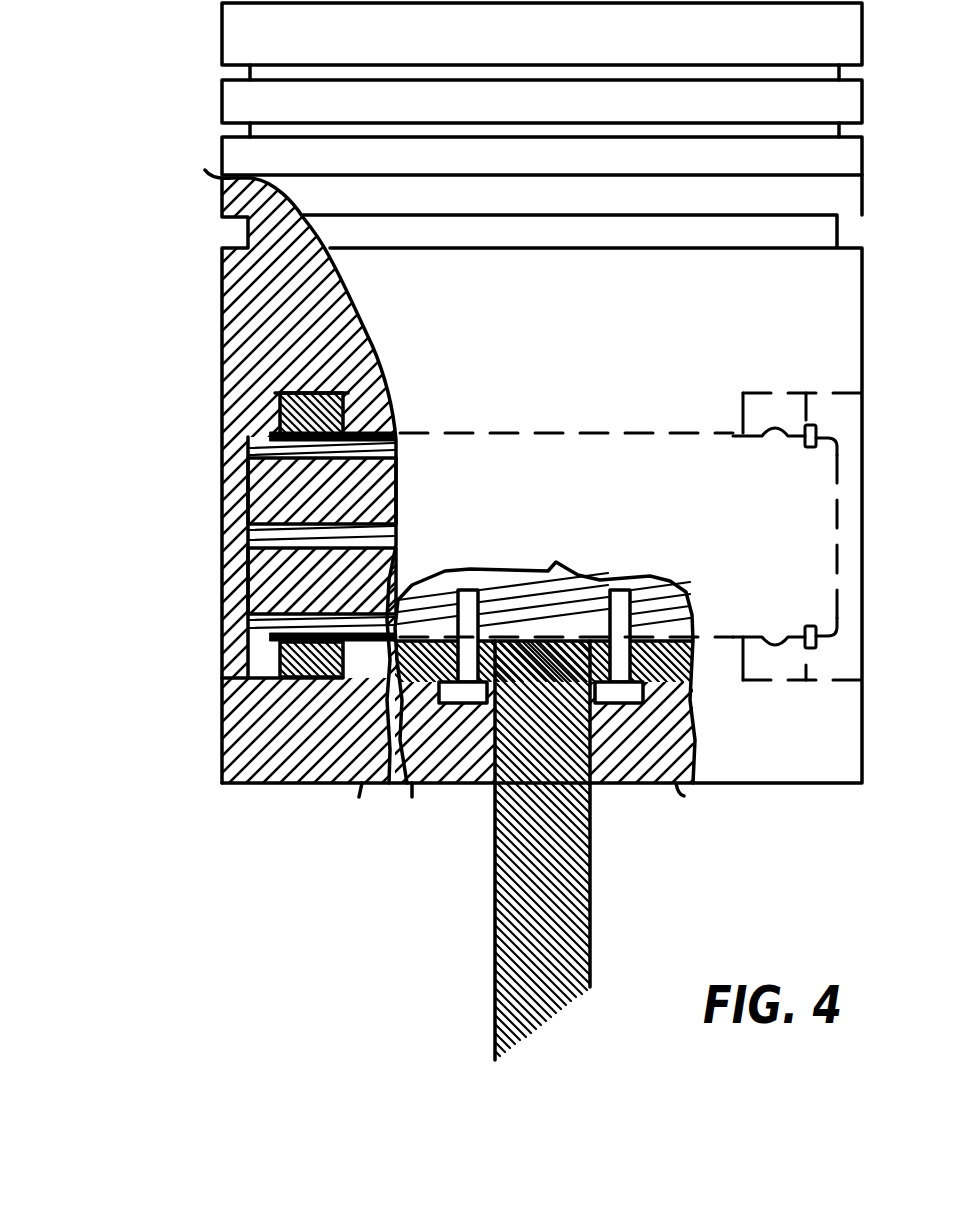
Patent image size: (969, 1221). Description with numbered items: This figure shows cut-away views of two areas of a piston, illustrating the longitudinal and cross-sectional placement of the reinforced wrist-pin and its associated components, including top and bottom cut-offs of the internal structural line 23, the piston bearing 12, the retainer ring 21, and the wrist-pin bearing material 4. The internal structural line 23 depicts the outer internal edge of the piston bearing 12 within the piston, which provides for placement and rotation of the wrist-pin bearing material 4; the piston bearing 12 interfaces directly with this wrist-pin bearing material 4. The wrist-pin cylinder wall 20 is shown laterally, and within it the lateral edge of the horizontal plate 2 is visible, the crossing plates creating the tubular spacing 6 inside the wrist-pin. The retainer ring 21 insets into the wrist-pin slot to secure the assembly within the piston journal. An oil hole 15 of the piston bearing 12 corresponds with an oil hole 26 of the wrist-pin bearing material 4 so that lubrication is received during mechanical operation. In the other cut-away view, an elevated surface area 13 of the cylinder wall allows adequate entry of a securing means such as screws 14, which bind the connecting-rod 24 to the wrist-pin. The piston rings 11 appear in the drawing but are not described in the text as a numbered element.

The horizontal plate 2 is at (262, 527).
The wrist-pin bearing material 4 is at (297, 340).
The tubular spacing 6 is at (232, 563).
The piston rings 11 is at (250, 103).
The piston bearing 12 is at (293, 404).
The elevated surface area 13 is at (491, 590).
The screws 14 is at (609, 697).
The oil hole 15 is at (345, 396).
The wrist-pin cylinder wall 20 is at (258, 472).
The retainer ring 21 is at (268, 433).
The internal structural line 23 is at (300, 390).
The connecting-rod 24 is at (512, 853).
The oil hole 26 is at (313, 415).